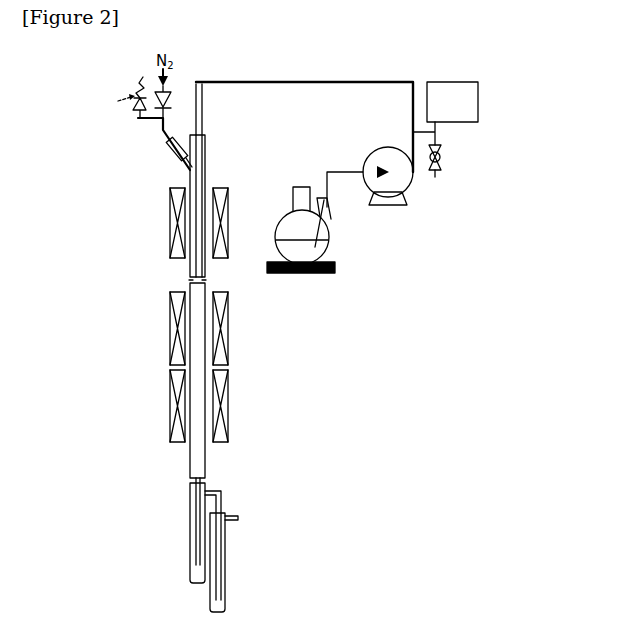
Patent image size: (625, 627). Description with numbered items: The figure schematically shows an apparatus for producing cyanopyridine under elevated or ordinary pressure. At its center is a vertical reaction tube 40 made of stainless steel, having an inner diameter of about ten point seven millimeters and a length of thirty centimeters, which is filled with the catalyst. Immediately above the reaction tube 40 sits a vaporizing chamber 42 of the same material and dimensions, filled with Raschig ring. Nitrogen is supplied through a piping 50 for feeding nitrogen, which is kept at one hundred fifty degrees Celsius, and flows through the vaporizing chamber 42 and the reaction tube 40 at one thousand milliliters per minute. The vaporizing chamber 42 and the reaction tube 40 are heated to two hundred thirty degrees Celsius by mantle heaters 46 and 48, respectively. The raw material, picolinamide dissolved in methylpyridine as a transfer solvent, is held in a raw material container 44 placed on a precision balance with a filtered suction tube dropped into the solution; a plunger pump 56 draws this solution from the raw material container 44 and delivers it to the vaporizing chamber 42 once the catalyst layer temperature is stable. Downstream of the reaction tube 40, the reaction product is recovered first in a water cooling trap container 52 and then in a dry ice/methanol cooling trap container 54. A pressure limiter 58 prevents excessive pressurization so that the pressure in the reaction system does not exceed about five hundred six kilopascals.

The reaction tube 40 is at (195, 420).
The vaporizing chamber 42 is at (193, 183).
The raw material container 44 is at (305, 253).
The mantle heater 46 is at (170, 222).
The mantle heater 48 is at (170, 400).
The piping for feeding nitrogen 50 is at (178, 140).
The water cooling trap container 52 is at (195, 527).
The dry ice/methanol cooling trap container 54 is at (222, 557).
The plunger pump 56 is at (393, 168).
The pressure limiter 58 is at (457, 98).